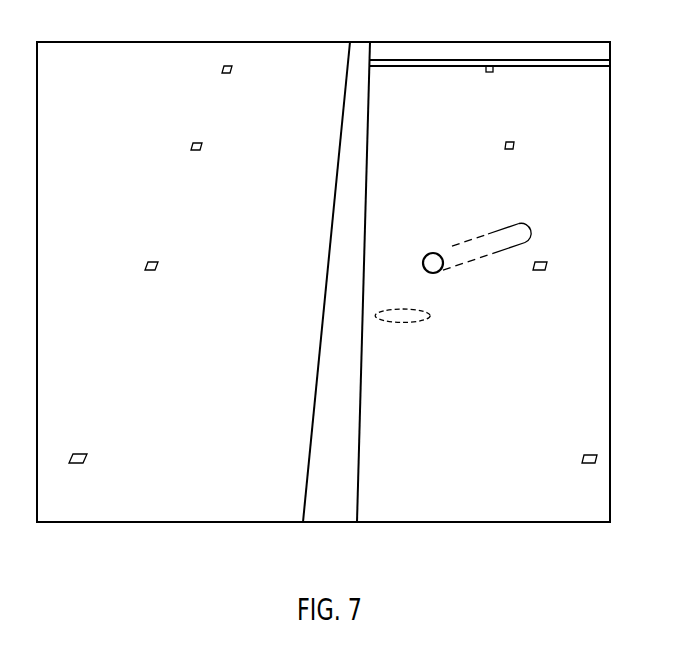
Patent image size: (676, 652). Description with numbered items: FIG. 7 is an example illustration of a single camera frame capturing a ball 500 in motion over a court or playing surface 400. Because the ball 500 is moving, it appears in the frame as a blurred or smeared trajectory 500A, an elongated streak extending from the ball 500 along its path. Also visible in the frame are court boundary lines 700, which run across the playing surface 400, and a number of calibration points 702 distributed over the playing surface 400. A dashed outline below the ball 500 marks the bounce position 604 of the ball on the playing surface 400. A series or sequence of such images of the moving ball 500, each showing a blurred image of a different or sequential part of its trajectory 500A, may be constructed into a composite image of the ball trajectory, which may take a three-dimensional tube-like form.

The court or playing surface 400 is at (225, 358).
The ball 500 is at (423, 263).
The blurred or smeared trajectory 500A is at (500, 229).
The bounce position 604 is at (402, 323).
The court boundary lines 700 is at (431, 67).
The calibration points 702 is at (190, 147).